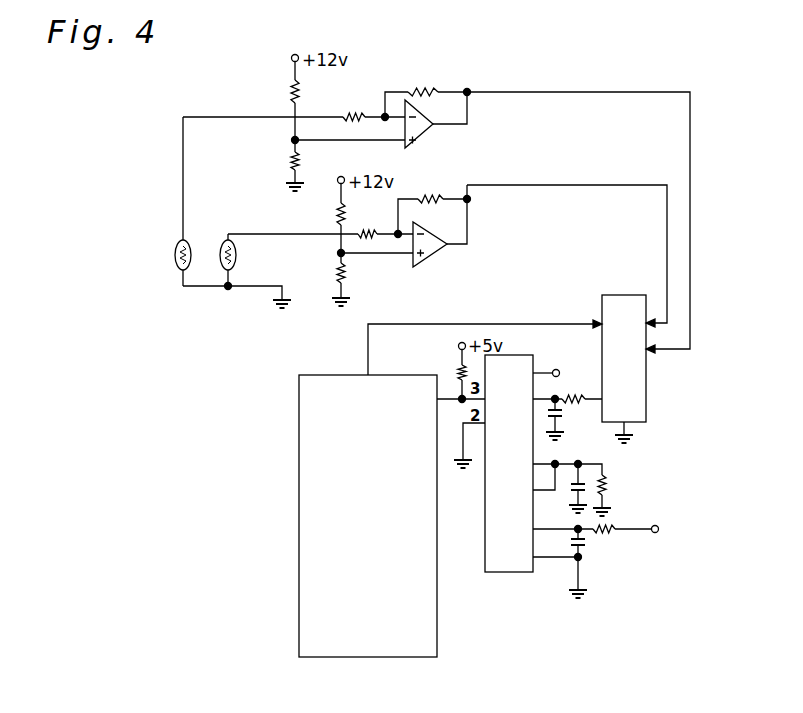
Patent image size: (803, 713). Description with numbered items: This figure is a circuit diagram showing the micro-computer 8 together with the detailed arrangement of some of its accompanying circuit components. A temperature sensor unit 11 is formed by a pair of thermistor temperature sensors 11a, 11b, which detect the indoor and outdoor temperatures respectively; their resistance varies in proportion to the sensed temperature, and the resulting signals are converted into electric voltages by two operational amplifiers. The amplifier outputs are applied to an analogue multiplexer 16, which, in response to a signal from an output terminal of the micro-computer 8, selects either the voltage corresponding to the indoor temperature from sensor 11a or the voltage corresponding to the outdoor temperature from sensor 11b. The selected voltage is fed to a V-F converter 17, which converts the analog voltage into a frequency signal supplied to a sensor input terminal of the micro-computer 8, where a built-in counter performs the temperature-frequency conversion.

The micro-computer 8 is at (299, 493).
The temperature sensor unit 11 is at (201, 288).
The temperature sensor 11a is at (178, 246).
The temperature sensor 11b is at (228, 244).
The analogue multiplexer 16 is at (646, 395).
The V-F converter 17 is at (512, 572).